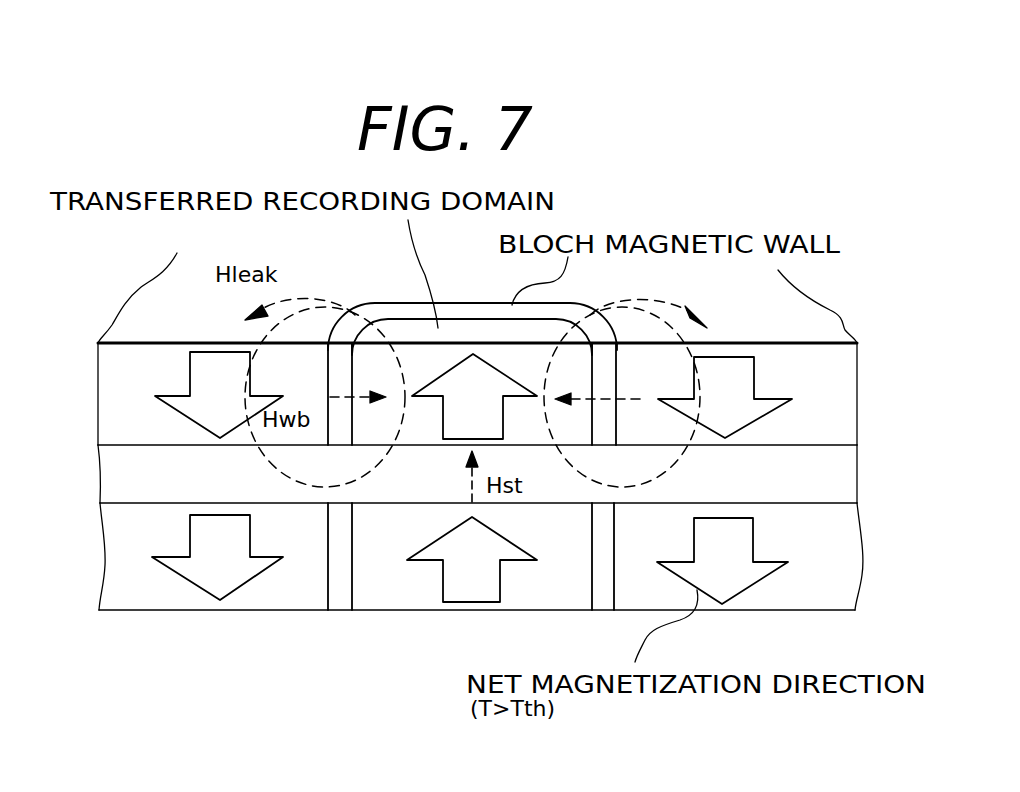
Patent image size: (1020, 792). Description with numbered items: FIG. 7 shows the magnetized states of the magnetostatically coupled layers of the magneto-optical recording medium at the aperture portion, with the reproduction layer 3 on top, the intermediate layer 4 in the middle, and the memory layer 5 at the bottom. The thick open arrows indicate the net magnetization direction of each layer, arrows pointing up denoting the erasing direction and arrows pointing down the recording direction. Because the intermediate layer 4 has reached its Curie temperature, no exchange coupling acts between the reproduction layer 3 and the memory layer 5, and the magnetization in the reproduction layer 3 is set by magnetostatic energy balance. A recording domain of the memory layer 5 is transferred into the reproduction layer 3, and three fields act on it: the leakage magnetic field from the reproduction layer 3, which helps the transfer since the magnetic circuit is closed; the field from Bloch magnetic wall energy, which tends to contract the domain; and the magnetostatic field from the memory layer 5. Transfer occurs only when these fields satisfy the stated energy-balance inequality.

The reproduction layer 3 is at (122, 400).
The intermediate layer 4 is at (122, 480).
The memory layer 5 is at (122, 566).